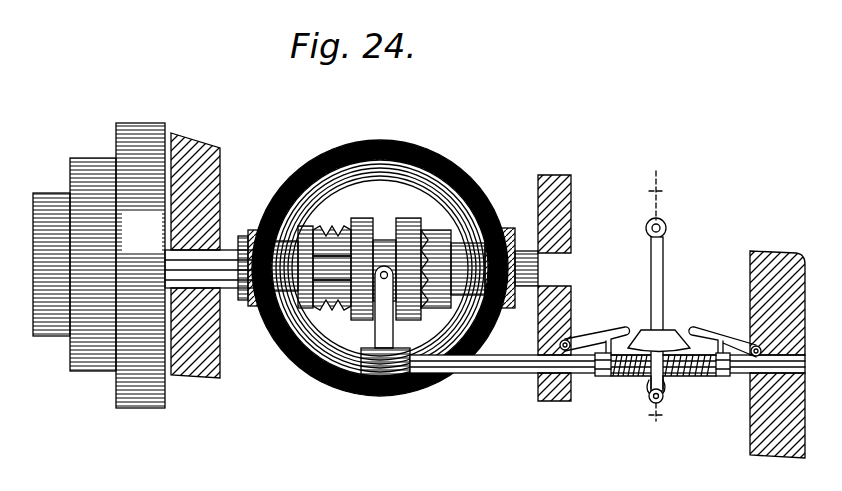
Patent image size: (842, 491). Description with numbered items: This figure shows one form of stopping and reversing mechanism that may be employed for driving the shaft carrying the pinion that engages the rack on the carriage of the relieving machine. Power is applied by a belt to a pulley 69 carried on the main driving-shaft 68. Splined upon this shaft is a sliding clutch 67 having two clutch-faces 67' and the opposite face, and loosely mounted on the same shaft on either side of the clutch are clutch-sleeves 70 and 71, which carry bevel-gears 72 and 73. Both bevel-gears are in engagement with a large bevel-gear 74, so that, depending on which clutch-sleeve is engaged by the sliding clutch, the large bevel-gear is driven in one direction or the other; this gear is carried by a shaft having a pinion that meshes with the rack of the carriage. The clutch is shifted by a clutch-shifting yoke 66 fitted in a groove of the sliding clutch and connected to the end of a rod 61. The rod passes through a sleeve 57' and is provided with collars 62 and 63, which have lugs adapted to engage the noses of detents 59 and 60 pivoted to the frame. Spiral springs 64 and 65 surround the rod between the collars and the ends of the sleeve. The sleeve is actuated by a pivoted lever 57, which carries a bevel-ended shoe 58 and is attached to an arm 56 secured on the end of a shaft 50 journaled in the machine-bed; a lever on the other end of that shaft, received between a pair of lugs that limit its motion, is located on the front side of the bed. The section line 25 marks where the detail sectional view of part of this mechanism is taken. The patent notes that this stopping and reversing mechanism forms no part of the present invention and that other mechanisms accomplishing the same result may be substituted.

The section line 25 is at (657, 297).
The shaft 50 is at (658, 216).
The arm 56 is at (656, 271).
The pivoted lever 57 is at (680, 403).
The sleeve 57' is at (648, 427).
The bevel-ended shoe 58 is at (654, 333).
The detent 59 is at (723, 323).
The detent 60 is at (580, 331).
The rod 61 is at (497, 366).
The collar 62 is at (720, 372).
The collar 63 is at (596, 372).
The spiral spring 64 is at (718, 381).
The spiral spring 65 is at (618, 367).
The clutch-shifting yoke 66 is at (367, 323).
The sliding clutch 67 is at (386, 253).
The clutch-face 67' is at (462, 226).
The main driving-shaft 68 is at (216, 210).
The pulley 69 is at (99, 265).
The clutch-sleeve 70 is at (463, 250).
The clutch-sleeve 71 is at (255, 301).
The bevel-gear 72 is at (493, 237).
The bevel-gear 73 is at (247, 225).
The large bevel-gear 74 is at (353, 132).